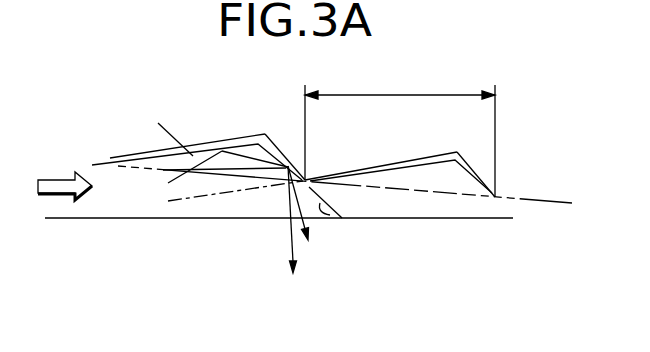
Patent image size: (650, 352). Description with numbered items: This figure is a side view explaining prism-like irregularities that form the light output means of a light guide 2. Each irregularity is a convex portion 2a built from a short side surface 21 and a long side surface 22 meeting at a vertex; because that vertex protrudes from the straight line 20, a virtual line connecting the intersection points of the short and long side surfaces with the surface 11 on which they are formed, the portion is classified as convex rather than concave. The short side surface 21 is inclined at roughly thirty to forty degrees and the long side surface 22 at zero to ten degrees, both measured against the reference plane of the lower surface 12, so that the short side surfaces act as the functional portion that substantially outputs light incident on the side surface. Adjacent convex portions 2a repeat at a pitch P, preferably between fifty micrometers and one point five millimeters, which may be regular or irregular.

The prism sheet 2 is at (203, 142).
The convex portion 2a is at (257, 151).
The upper surface of prism sheet 11 is at (134, 155).
The lower surface 12 is at (442, 219).
The straight line 20 is at (547, 204).
The short side surface 21 is at (483, 181).
The long side surface 22 is at (400, 163).
The repetitive pitch P is at (400, 133).